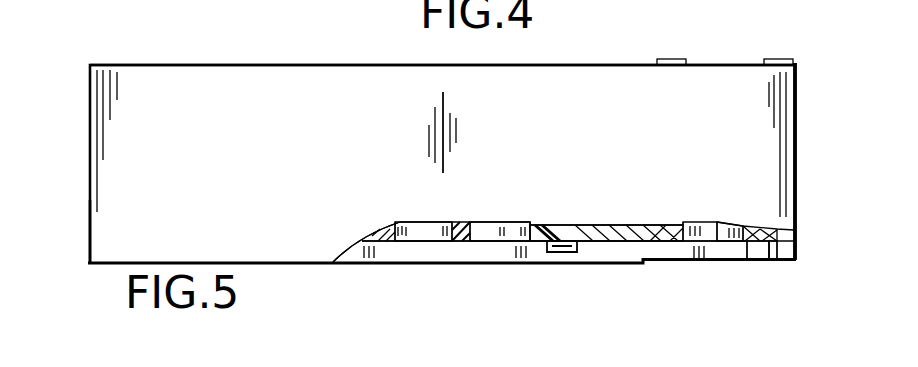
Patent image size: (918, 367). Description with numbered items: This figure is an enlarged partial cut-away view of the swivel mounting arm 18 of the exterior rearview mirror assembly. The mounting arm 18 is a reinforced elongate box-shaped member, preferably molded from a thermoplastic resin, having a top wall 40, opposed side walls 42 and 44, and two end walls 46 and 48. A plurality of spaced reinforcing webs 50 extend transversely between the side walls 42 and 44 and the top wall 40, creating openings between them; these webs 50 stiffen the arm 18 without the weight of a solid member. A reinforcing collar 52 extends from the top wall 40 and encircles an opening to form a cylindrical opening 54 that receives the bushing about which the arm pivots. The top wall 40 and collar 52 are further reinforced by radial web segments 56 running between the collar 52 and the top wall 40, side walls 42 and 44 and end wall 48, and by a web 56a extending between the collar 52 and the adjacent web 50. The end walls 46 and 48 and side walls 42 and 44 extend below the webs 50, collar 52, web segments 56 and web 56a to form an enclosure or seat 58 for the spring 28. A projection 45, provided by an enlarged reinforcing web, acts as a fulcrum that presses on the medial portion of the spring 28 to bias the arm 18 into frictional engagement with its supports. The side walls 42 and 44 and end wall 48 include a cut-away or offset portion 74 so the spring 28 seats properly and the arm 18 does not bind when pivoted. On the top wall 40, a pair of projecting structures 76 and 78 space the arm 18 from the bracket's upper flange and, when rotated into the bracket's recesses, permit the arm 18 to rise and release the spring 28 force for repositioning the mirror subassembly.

The swivel mounting arm 18 is at (78, 84).
The spring 28 is at (273, 10).
The top wall 40 is at (403, 65).
The side wall 42 is at (695, 122).
The side wall 44 is at (406, 250).
The projection 45 is at (560, 252).
The end wall 46 is at (88, 213).
The end wall 48 is at (794, 240).
The reinforcing webs 50 is at (464, 240).
The reinforcing collar 52 is at (683, 228).
The cylindrical opening 54 is at (747, 260).
The radial web segments 56 is at (767, 262).
The web 56a is at (642, 242).
The seat 58 is at (340, 274).
The offset portion 74 is at (724, 242).
The projecting structure 76 is at (668, 60).
The projecting structure 78 is at (775, 60).